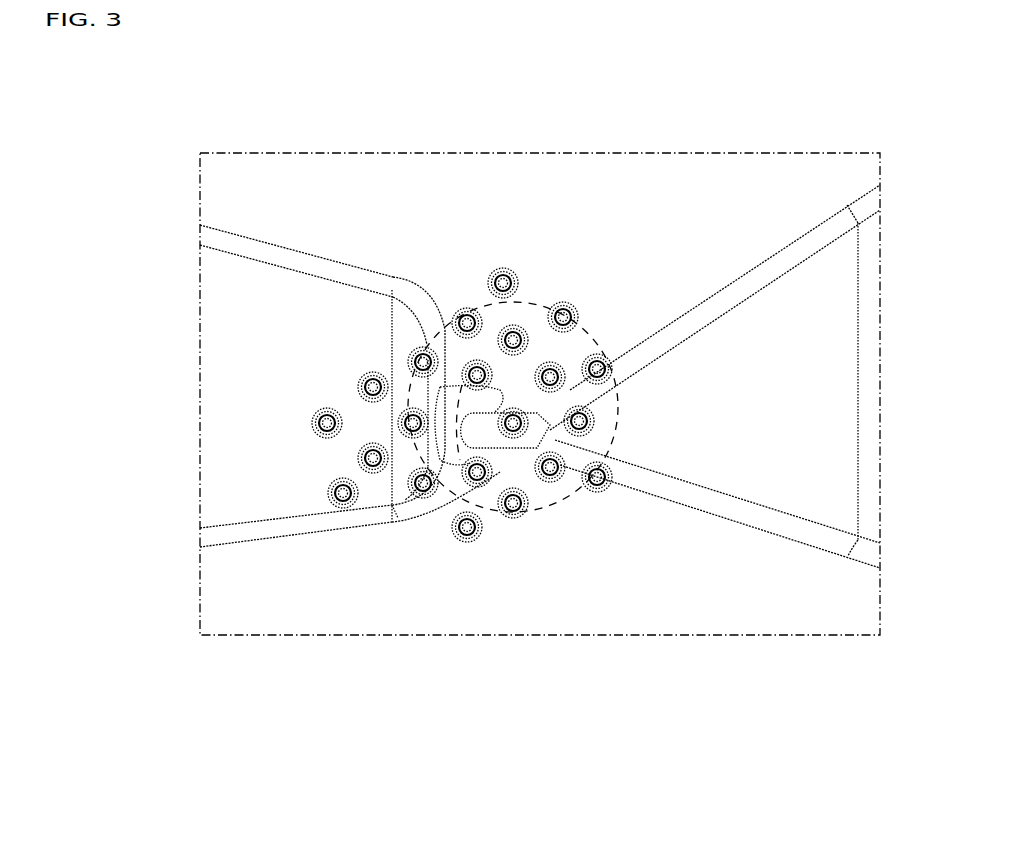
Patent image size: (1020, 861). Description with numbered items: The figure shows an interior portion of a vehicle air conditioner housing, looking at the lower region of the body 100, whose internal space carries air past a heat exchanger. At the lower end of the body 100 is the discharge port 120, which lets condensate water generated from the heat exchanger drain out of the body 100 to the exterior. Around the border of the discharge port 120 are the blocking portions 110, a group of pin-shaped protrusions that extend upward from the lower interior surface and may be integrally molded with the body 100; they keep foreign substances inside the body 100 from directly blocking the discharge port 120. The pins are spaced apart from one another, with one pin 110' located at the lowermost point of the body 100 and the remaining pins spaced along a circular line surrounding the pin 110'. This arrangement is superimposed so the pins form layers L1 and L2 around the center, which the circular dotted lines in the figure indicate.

The body 100 is at (735, 203).
The blocking portions 110 is at (339, 405).
The pin 110' is at (517, 275).
The discharge port 120 is at (437, 438).
The layer L1 is at (533, 494).
The layer L2 is at (574, 503).